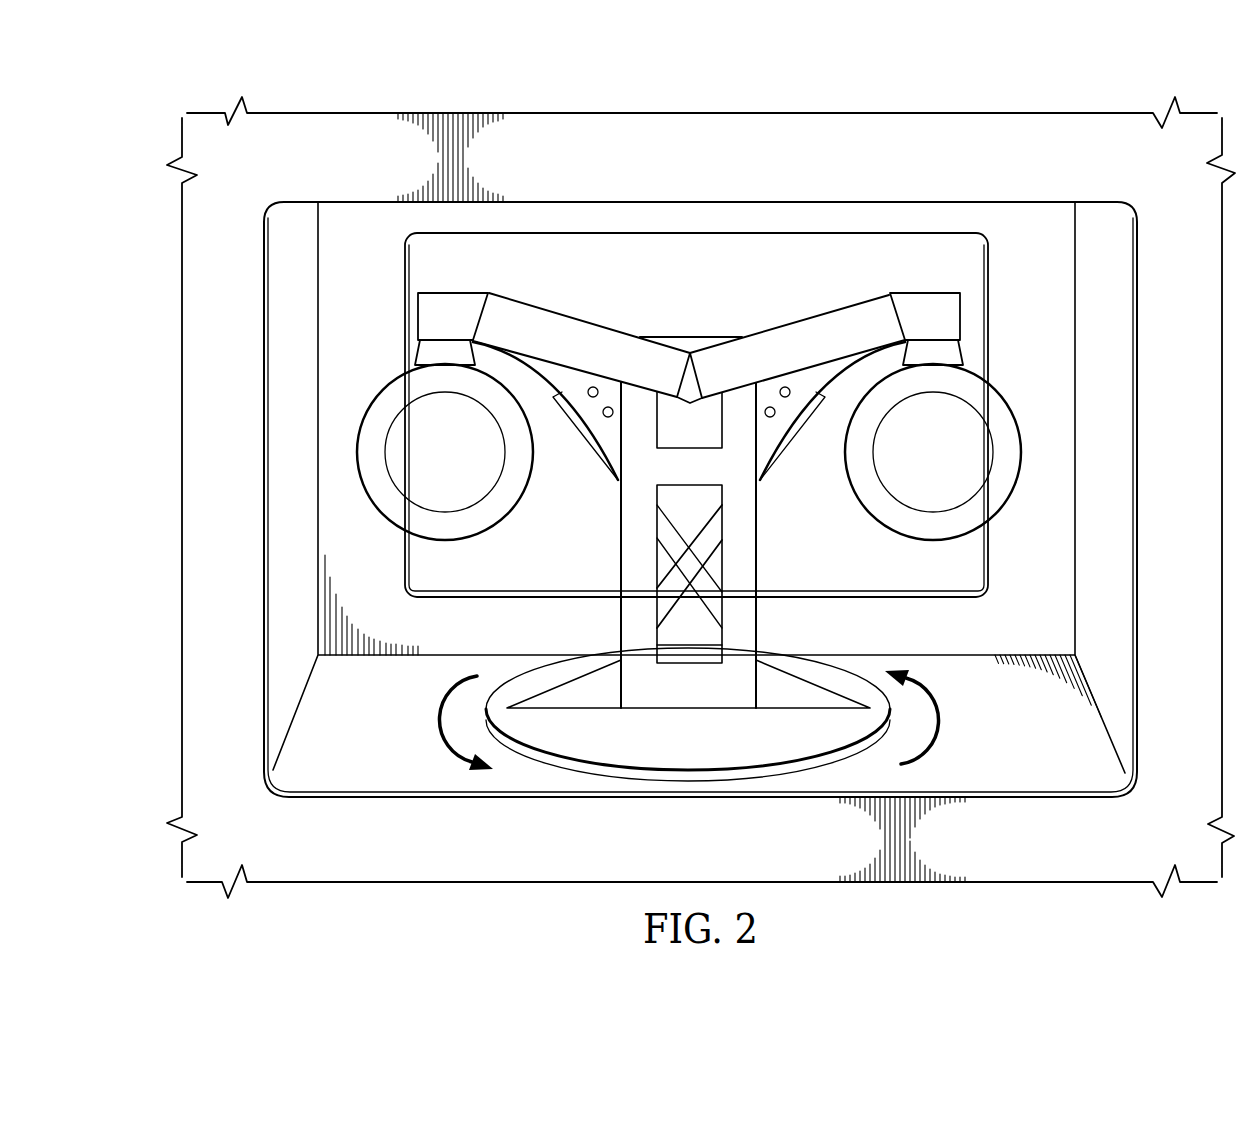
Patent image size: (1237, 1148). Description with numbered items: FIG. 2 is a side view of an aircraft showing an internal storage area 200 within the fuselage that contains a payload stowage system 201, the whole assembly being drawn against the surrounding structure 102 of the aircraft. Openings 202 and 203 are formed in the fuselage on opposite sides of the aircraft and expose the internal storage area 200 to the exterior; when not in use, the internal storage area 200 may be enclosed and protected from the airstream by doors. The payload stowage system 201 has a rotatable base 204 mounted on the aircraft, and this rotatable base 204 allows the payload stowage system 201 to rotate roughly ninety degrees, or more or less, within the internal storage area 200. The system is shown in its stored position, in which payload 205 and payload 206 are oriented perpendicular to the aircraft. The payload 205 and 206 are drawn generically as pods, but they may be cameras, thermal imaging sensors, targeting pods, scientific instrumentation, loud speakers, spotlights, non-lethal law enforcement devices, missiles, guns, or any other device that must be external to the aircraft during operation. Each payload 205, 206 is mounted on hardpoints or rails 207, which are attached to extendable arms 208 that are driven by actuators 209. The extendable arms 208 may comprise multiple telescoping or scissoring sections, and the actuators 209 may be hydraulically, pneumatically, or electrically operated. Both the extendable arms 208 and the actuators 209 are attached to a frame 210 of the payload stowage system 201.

The wall surface 102 is at (973, 123).
The internal storage area 200 is at (258, 191).
The payload stowage system 201 is at (701, 306).
The opening 202 is at (1052, 790).
The opening 203 is at (800, 592).
The rotatable base 204 is at (754, 757).
The payload 205 is at (505, 523).
The payload 206 is at (873, 520).
The hardpoints or rails 207 is at (418, 318).
The extendable arms 208 is at (570, 286).
The actuators 209 is at (593, 448).
The frame 210 is at (628, 537).